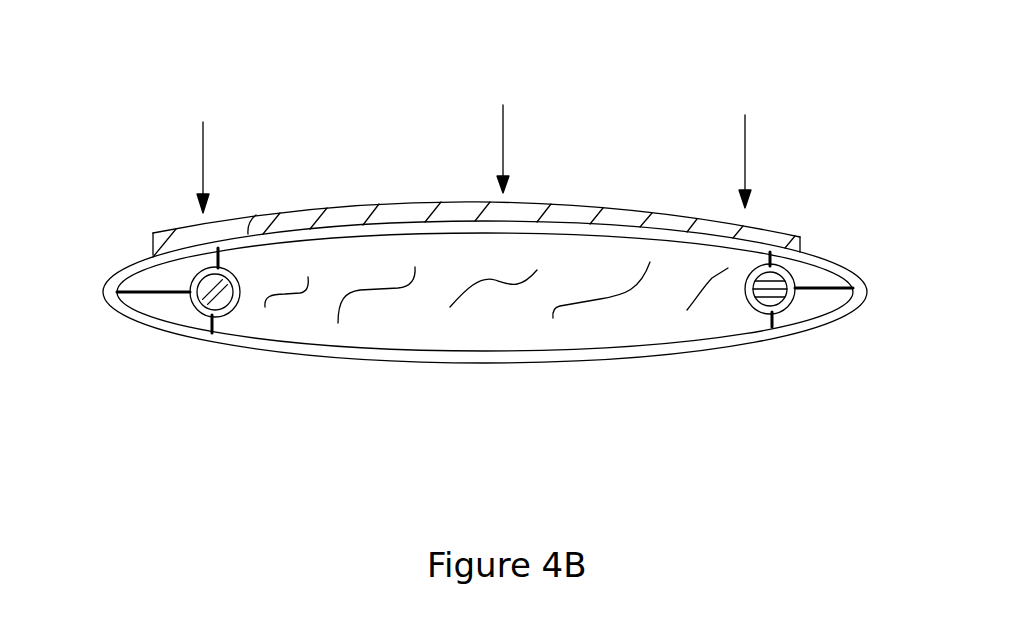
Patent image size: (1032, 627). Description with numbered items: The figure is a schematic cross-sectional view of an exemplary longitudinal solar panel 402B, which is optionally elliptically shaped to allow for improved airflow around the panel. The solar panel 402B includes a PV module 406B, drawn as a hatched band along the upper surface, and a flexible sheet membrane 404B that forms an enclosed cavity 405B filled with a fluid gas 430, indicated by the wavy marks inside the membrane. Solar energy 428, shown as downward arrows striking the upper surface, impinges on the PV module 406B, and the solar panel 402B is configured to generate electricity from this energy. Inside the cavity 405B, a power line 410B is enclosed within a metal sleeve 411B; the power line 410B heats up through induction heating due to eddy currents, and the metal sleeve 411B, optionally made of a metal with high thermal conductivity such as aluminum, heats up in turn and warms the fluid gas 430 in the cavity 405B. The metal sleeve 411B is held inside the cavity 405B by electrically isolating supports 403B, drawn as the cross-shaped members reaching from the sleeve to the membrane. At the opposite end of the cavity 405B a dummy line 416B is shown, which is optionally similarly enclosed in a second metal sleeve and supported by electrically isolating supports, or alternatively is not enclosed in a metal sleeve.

The solar panel 402B is at (485, 269).
The electrically isolating supports 403B is at (823, 290).
The flexible sheet membrane 404B is at (456, 361).
The cavity 405B is at (603, 332).
The PV module 406B is at (307, 204).
The power line 410B is at (781, 276).
The metal sleeve 411B is at (750, 298).
The dummy line 416B is at (157, 290).
The solar energy 428 is at (747, 157).
The fluid gas 430 is at (288, 293).